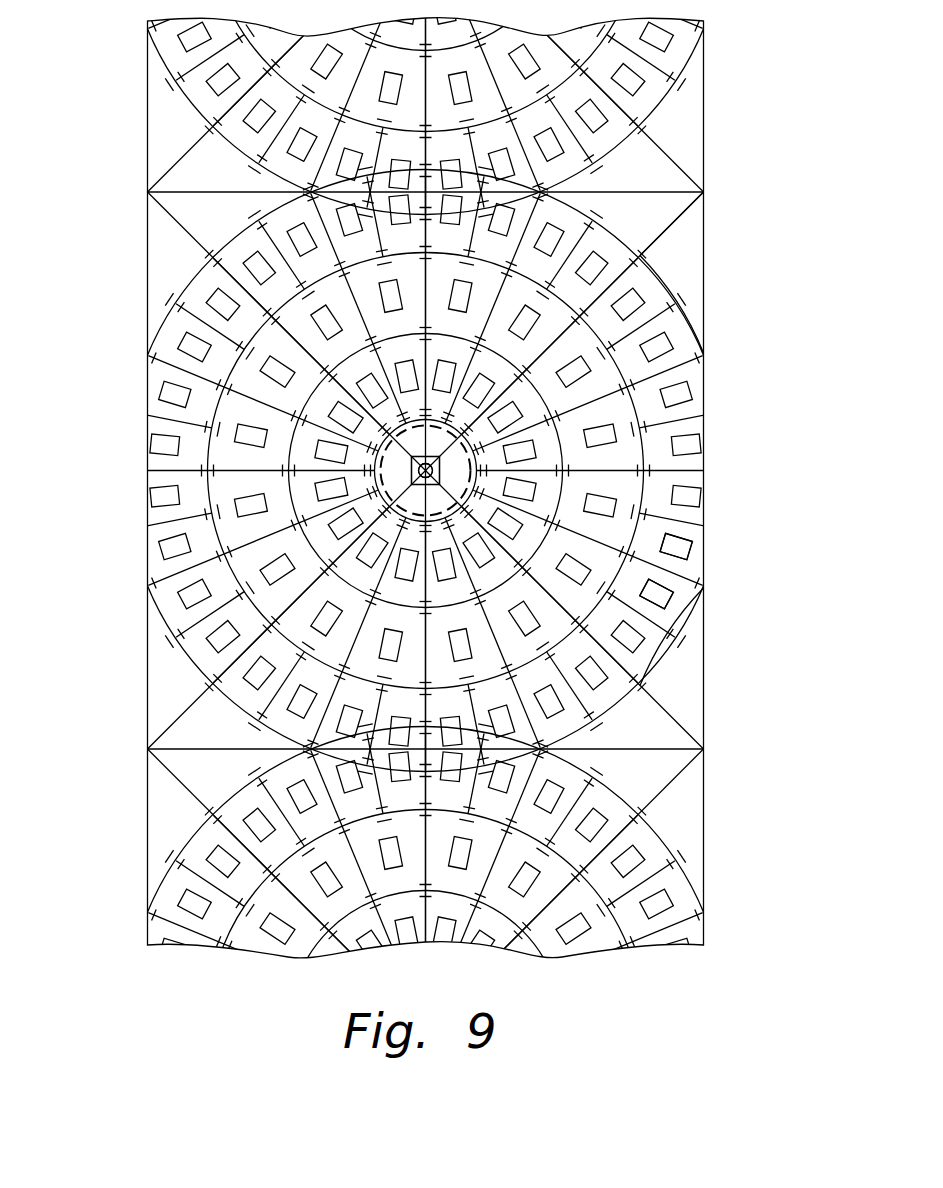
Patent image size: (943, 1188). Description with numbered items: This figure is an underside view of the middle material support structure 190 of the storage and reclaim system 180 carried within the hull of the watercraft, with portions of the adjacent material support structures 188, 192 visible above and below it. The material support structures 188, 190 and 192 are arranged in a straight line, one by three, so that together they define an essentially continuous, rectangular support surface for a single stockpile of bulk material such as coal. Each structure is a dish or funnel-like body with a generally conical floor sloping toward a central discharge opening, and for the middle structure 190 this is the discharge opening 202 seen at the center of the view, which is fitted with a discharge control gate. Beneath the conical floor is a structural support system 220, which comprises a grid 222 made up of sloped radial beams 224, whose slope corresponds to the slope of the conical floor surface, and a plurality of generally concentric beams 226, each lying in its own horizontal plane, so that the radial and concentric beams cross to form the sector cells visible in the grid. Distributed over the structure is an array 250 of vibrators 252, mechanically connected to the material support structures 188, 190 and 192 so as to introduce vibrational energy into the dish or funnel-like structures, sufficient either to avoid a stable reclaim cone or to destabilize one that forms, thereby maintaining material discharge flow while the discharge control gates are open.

The storage and reclaim system 180 is at (88, 512).
The material support structure 188 is at (160, 809).
The material support structure 190 is at (170, 678).
The material support structure 192 is at (165, 125).
The discharge opening 202 is at (473, 500).
The structural support system 220 is at (103, 364).
The grid 222 is at (106, 308).
The sloped radial beam 224 is at (673, 225).
The concentric beam 226 is at (660, 280).
The array of vibrators 250 is at (748, 684).
The vibrator 252 is at (678, 550).